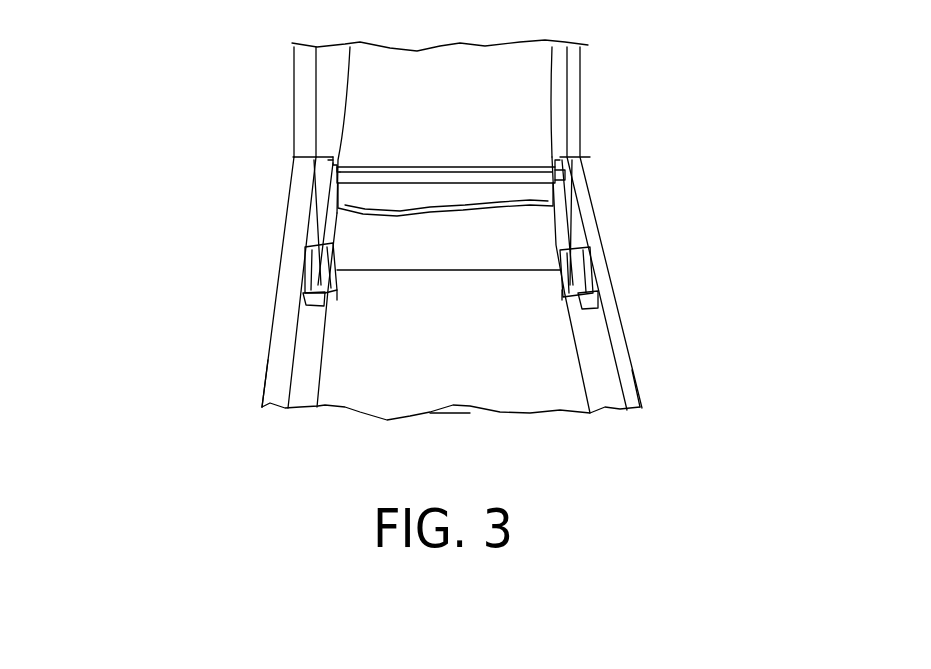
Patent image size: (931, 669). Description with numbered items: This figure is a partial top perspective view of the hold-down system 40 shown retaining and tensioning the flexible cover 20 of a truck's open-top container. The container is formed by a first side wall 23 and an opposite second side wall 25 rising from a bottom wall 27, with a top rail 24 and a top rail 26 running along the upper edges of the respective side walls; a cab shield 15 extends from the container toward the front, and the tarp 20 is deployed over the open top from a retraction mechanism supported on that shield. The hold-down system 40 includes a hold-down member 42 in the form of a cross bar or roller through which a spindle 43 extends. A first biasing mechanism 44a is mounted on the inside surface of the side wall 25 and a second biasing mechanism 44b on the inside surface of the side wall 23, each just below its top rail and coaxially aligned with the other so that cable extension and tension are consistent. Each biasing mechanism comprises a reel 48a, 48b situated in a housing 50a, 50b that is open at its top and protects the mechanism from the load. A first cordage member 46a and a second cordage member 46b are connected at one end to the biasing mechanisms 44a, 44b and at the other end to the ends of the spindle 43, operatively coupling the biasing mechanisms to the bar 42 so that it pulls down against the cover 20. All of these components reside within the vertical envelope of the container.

The cab shield 15 is at (302, 87).
The flexible cover 20 is at (525, 93).
The first side wall 23 is at (300, 392).
The top rail 24 is at (292, 210).
The second side wall 25 is at (602, 387).
The top rail 26 is at (617, 328).
The bottom wall 27 is at (468, 400).
The hold-down system 40 is at (372, 157).
The hold-down member 42 is at (503, 177).
The spindle 43 is at (332, 150).
The first biasing mechanism 44a is at (560, 297).
The second biasing mechanism 44b is at (335, 297).
The first cordage member 46a is at (577, 237).
The second cordage member 46b is at (318, 235).
The reel 48a is at (590, 273).
The reel 48b is at (310, 263).
The housing 50a is at (585, 312).
The housing 50b is at (313, 308).